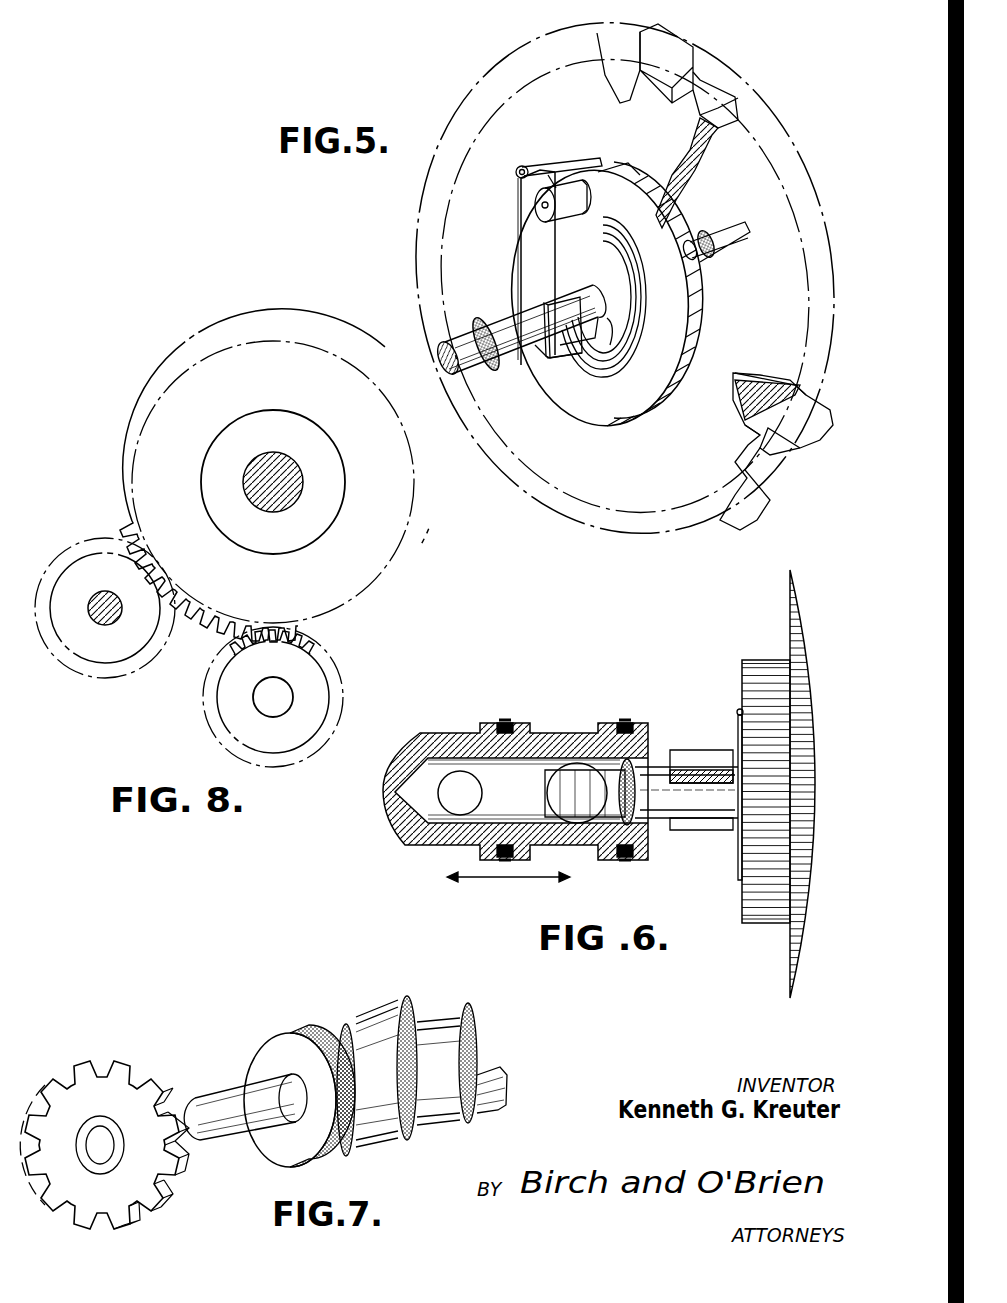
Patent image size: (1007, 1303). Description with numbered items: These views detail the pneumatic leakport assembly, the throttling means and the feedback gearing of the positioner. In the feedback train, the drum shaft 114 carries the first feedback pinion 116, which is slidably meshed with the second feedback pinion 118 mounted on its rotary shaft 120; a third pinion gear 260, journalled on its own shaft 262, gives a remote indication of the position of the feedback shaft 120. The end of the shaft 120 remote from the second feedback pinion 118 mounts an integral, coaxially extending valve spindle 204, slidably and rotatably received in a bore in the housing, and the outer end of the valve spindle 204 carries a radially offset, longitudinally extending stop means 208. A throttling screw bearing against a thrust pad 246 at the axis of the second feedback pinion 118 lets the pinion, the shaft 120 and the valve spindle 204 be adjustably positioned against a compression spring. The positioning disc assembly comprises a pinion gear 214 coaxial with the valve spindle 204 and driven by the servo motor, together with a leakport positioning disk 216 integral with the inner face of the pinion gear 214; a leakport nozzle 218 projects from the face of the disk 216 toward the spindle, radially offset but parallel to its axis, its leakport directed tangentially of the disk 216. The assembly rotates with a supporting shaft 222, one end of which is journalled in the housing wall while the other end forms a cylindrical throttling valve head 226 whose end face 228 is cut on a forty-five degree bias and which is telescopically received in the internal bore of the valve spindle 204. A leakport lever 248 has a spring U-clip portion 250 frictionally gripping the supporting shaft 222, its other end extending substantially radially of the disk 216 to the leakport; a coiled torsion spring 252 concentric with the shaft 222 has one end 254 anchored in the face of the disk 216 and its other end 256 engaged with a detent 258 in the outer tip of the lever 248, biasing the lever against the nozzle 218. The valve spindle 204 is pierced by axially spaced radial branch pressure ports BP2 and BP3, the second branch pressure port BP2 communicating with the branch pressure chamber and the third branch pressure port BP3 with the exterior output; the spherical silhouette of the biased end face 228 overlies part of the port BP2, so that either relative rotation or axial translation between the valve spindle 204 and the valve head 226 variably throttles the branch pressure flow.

In FIG. 8, the drum shaft 114 is at (255, 478).
In FIG. 8, the first feedback pinion 116 is at (143, 392).
In FIG. 8, the second feedback pinion 118 is at (205, 690).
In FIG. 7, the second feedback pinion 118 is at (115, 1052).
In FIG. 7, the rotary shaft 120 is at (217, 1085).
In FIG. 6, the valve spindle 204 is at (467, 731).
In FIG. 7, the valve spindle 204 is at (346, 1024).
In FIG. 7, the stop means 208 is at (500, 1068).
In FIG. 5, the pinion gear 214 is at (678, 68).
In FIG. 6, the pinion gear 214 is at (802, 784).
In FIG. 5, the leakport positioning disk 216 is at (608, 172).
In FIG. 6, the leakport positioning disk 216 is at (765, 722).
In FIG. 5, the leakport nozzle 218 is at (576, 190).
In FIG. 5, the supporting shaft 222 is at (722, 232).
In FIG. 6, the supporting shaft 222 is at (718, 797).
In FIG. 5, the throttling valve head 226 is at (453, 338).
In FIG. 6, the throttling valve head 226 is at (630, 826).
In FIG. 5, the end face 228 is at (447, 370).
In FIG. 6, the end face 228 is at (575, 810).
In FIG. 8, the thrust pad 246 is at (283, 692).
In FIG. 5, the leakport lever 248 is at (533, 238).
In FIG. 6, the leakport lever 248 is at (697, 770).
In FIG. 5, the spring U-clip portion 250 is at (565, 335).
In FIG. 6, the spring U-clip portion 250 is at (697, 832).
In FIG. 5, the coiled torsion spring 252 is at (640, 298).
In FIG. 6, the coiled torsion spring 252 is at (737, 845).
In FIG. 5, the one end 254 is at (592, 336).
In FIG. 5, the other end 256 is at (515, 172).
In FIG. 5, the detent 258 is at (547, 154).
In FIG. 8, the third pinion gear 260 is at (130, 680).
In FIG. 8, the shaft 262 is at (96, 594).
In FIG. 6, the second branch pressure port BP2 is at (565, 785).
In FIG. 6, the third branch pressure port BP3 is at (455, 797).